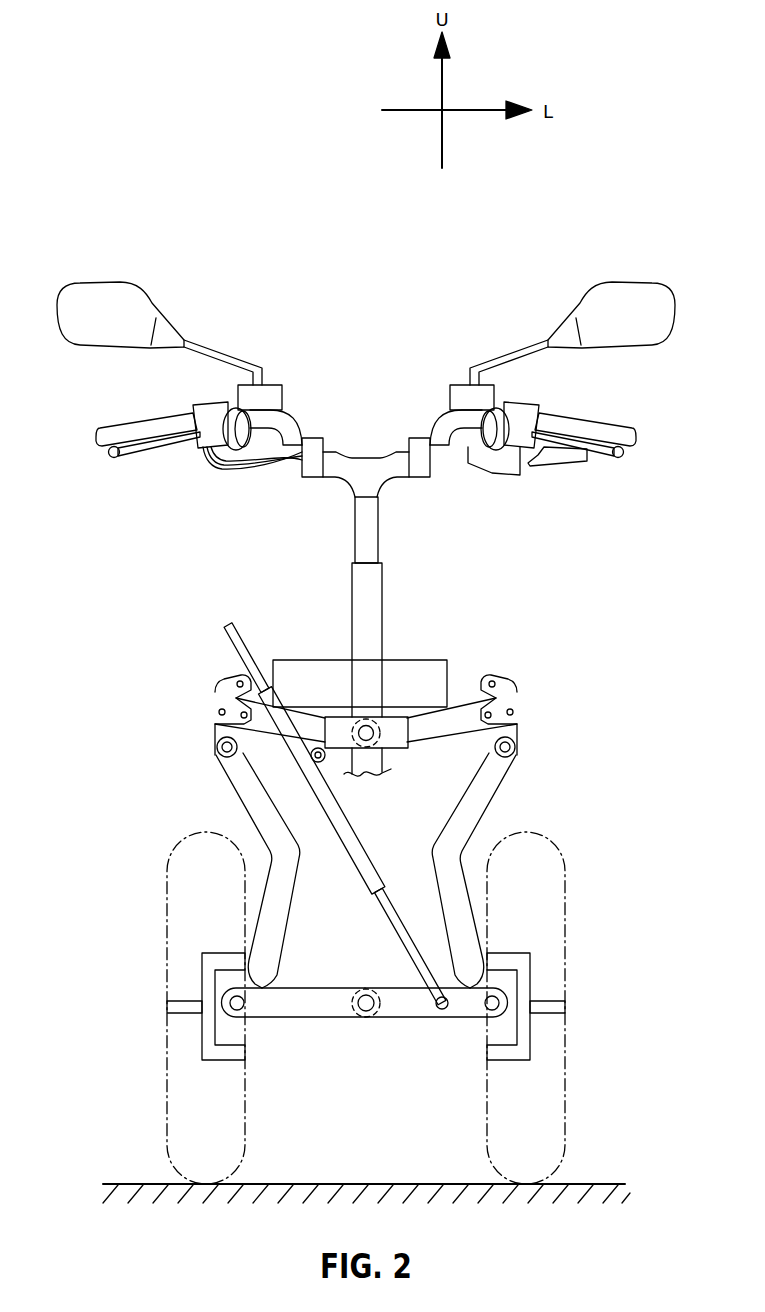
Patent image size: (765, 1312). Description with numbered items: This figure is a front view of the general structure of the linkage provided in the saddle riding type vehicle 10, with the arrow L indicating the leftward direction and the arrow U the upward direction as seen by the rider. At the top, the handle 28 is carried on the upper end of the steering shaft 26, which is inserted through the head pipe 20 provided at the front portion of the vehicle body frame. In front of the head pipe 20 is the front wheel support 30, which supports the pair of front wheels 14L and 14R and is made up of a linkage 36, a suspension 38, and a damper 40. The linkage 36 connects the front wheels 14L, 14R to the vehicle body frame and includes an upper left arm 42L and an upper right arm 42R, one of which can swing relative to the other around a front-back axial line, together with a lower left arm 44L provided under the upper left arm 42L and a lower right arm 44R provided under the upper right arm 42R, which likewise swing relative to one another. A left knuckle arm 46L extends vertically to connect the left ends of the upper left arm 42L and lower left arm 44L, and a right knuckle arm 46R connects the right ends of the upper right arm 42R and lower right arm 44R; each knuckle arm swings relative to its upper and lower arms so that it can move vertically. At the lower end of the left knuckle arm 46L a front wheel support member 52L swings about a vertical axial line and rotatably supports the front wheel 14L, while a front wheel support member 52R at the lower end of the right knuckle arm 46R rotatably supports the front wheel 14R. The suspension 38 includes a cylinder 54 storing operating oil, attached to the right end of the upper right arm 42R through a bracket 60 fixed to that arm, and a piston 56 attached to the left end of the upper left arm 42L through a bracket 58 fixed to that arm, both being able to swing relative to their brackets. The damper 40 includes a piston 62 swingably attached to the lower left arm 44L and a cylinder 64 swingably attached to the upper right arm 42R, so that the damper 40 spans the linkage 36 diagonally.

The saddle riding type vehicle 10 is at (575, 259).
The handle 28 is at (617, 430).
The steering shaft 26 is at (379, 532).
The head pipe 20 is at (383, 592).
The cylinder 54 is at (300, 660).
The suspension 38 is at (447, 658).
The piston 56 is at (490, 676).
The bracket 58 is at (520, 694).
The bracket 60 is at (218, 684).
The upper right arm 42R is at (215, 738).
The upper left arm 42L is at (518, 738).
The front wheel support 30 is at (213, 763).
The linkage 36 is at (528, 756).
The right knuckle arm 46R is at (238, 791).
The left knuckle arm 46L is at (493, 791).
The damper 40 is at (365, 842).
The cylinder 64 is at (352, 870).
The piston 62 is at (386, 920).
The lower right arm 44R is at (295, 1015).
The lower left arm 44L is at (413, 1015).
The front wheel support member 52R is at (202, 970).
The front wheel support member 52L is at (530, 970).
The front wheel 14R is at (166, 888).
The front wheel 14L is at (566, 888).